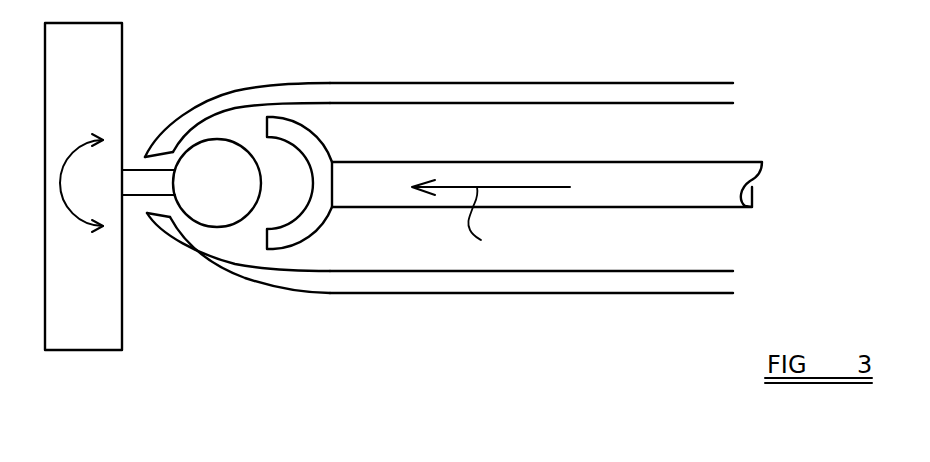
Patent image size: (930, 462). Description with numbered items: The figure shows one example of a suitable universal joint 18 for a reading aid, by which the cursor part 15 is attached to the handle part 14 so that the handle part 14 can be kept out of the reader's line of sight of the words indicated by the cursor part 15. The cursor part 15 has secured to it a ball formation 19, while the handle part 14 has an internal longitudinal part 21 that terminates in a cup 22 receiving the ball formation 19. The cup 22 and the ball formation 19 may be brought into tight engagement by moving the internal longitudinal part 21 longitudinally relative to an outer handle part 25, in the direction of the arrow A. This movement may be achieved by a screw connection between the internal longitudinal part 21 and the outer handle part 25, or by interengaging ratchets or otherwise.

The handle part 14 is at (602, 305).
The cursor part 15 is at (73, 338).
The universal joint 18 is at (153, 272).
The ball formation 19 is at (237, 163).
The internal longitudinal part 21 is at (552, 162).
The cup 22 is at (308, 220).
The outer handle part 25 is at (416, 286).